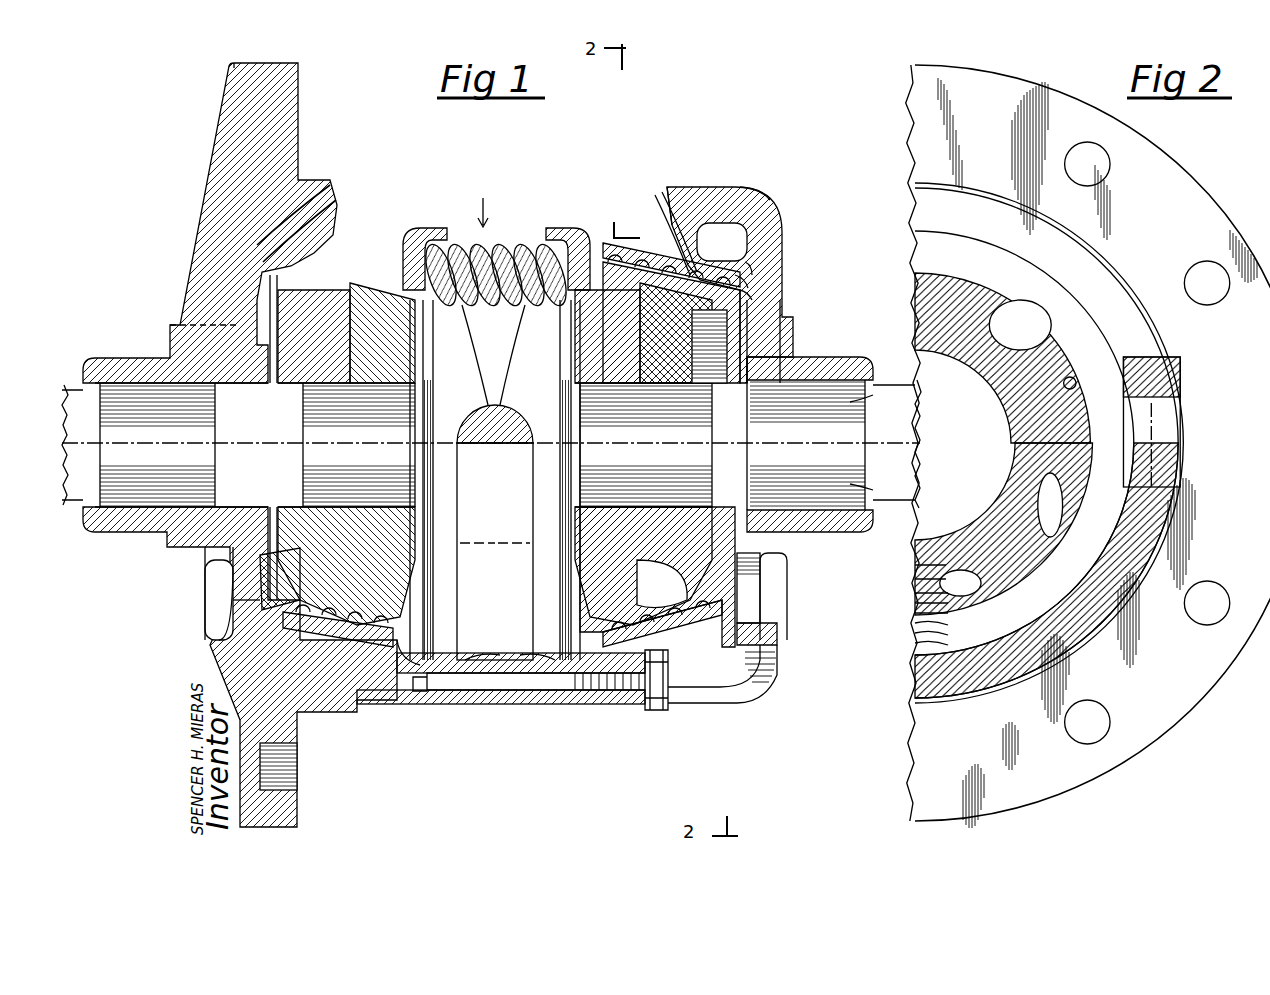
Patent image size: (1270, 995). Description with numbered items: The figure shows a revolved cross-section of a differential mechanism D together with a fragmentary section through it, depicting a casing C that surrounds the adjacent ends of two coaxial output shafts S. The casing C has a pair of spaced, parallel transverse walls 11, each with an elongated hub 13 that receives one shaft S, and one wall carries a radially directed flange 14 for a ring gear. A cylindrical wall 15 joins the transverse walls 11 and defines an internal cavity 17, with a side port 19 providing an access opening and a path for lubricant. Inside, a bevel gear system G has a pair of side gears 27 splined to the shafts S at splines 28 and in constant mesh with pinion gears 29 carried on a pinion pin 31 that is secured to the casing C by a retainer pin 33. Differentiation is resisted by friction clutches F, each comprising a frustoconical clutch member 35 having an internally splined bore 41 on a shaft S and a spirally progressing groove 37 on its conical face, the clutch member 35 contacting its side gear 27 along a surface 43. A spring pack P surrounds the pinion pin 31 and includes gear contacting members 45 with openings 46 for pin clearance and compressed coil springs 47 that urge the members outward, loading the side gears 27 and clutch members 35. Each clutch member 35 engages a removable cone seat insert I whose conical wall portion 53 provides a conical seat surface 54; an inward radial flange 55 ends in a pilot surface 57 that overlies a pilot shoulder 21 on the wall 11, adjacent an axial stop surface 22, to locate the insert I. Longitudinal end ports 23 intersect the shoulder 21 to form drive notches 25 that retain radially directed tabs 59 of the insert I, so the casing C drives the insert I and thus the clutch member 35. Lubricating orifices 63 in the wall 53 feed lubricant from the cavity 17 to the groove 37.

In FIG. 1, the transverse wall 11 is at (210, 330).
In FIG. 1, the hub 13 is at (140, 358).
In FIG. 1, the radially directed flange 14 is at (238, 98).
In FIG. 2, the radially directed flange 14 is at (1080, 443).
In FIG. 1, the cylindrical wall 15 is at (414, 690).
In FIG. 1, the internal cavity 17 is at (592, 655).
In FIG. 1, the side port 19 is at (660, 200).
In FIG. 1, the pilot shoulder 21 is at (772, 262).
In FIG. 2, the pilot shoulder 21 is at (1046, 485).
In FIG. 1, the axial stop surface 22 is at (740, 272).
In FIG. 1, the end port 23 is at (220, 585).
In FIG. 2, the drive notch 25 is at (908, 582).
In FIG. 1, the side gear 27 is at (300, 320).
In FIG. 1, the splines 28 is at (885, 405).
In FIG. 1, the pinion gear 29 is at (565, 630).
In FIG. 1, the pinion pin 31 is at (482, 660).
In FIG. 2, the pinion pin 31 is at (1175, 422).
In FIG. 1, the retainer pin 33 is at (654, 712).
In FIG. 1, the frustoconical clutch member 35 is at (300, 625).
In FIG. 1, the spirally progressing groove 37 is at (360, 610).
In FIG. 1, the internally splined bore 41 is at (790, 355).
In FIG. 1, the contact surface 43 is at (770, 530).
In FIG. 1, the gear contacting member 45 is at (610, 300).
In FIG. 1, the openings 46 is at (510, 250).
In FIG. 1, the coil springs 47 is at (460, 245).
In FIG. 1, the conical wall portion 53 is at (696, 190).
In FIG. 1, the conical seat surface 54 is at (695, 196).
In FIG. 1, the radial flange 55 is at (760, 255).
In FIG. 2, the radial flange 55 is at (892, 626).
In FIG. 1, the pilot surface 57 is at (752, 295).
In FIG. 2, the pilot surface 57 is at (1095, 402).
In FIG. 1, the radially directed tab 59 is at (780, 570).
In FIG. 2, the radially directed tab 59 is at (909, 609).
In FIG. 1, the lubricating orifice 63 is at (703, 627).
In FIG. 2, the lubricating orifice 63 is at (906, 640).
In FIG. 1, the casing C is at (216, 137).
In FIG. 2, the casing C is at (1088, 443).
In FIG. 1, the differential mechanism D is at (748, 187).
In FIG. 1, the friction clutch F is at (262, 272).
In FIG. 1, the bevel gear system G is at (385, 620).
In FIG. 1, the cone seat insert I is at (240, 610).
In FIG. 1, the spring pack P is at (483, 201).
In FIG. 1, the output shaft S is at (106, 360).